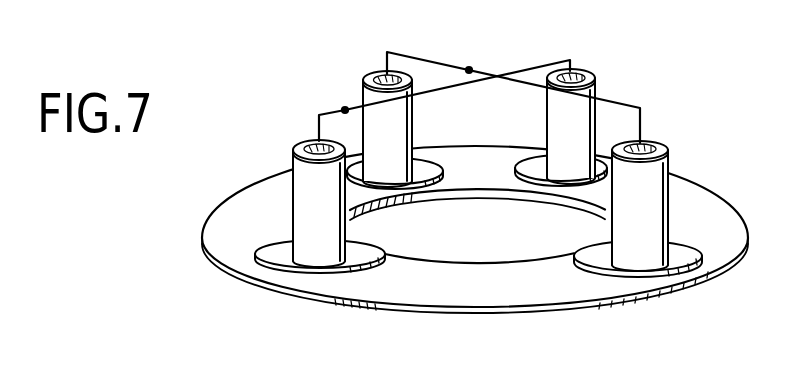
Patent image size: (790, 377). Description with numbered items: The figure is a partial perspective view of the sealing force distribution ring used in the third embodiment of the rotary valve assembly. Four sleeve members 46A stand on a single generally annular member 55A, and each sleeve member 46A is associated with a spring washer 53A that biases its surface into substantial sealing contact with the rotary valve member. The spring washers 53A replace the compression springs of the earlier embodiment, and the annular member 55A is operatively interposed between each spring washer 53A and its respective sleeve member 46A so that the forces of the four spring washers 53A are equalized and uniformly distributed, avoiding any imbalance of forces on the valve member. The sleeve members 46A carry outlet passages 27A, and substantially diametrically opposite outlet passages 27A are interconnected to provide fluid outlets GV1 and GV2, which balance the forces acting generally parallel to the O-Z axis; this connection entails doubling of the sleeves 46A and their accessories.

The outlet passage 27A is at (318, 142).
The spring washer 53A is at (520, 152).
The sleeve member 46A is at (622, 228).
The generally annular member 55A is at (493, 288).
The fluid outlet GV1 is at (345, 107).
The fluid outlet GV2 is at (469, 68).